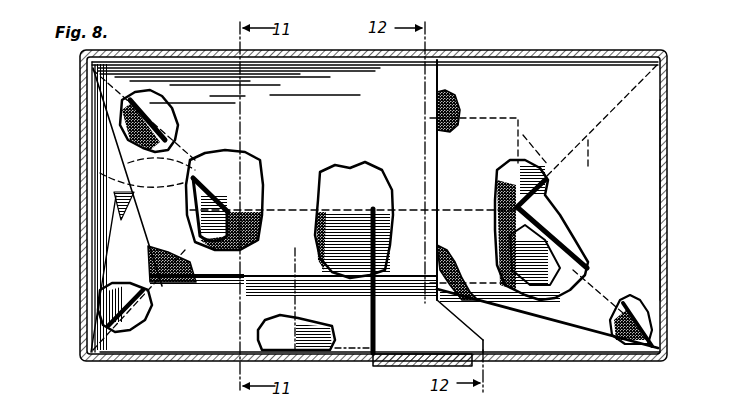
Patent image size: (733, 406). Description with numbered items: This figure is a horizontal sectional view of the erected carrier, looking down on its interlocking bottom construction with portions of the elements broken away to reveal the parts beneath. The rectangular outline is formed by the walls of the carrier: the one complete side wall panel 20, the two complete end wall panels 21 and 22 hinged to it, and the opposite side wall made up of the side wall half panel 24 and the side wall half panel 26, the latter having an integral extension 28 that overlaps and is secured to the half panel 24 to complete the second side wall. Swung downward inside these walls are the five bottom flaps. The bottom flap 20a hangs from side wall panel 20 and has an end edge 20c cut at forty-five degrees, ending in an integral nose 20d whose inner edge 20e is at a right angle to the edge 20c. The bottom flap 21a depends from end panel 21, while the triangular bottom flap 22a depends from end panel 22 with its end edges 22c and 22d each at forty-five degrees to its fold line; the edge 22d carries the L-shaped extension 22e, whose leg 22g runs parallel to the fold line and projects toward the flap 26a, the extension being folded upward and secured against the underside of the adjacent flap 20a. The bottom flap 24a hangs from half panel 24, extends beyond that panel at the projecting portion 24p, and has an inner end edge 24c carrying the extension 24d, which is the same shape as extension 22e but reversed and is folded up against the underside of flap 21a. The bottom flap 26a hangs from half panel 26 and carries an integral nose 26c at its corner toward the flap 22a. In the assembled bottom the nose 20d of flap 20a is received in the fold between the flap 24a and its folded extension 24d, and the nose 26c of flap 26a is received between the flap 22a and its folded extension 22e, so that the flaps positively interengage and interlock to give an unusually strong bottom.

The side wall panel 20 is at (528, 32).
The bottom flap 20a is at (354, 121).
The end edge 20c is at (548, 197).
The nose 20d is at (565, 268).
The inner edge 20e is at (555, 240).
The end wall panel 21 is at (668, 180).
The bottom flap 21a is at (559, 100).
The end wall panel 22 is at (88, 196).
The bottom flap 22a is at (100, 238).
The end edge 22c is at (132, 312).
The end edge 22d is at (168, 118).
The extension 22e is at (214, 172).
The leg 22g is at (340, 215).
The side wall half panel 24 is at (567, 360).
The projecting portion 24p is at (305, 334).
The bottom flap 24a is at (527, 335).
The inner end edge 24c is at (615, 318).
The extension 24d is at (585, 278).
The side wall half panel 26 is at (187, 362).
The bottom flap 26a is at (150, 338).
The nose 26c is at (118, 195).
The extension 28 is at (412, 363).